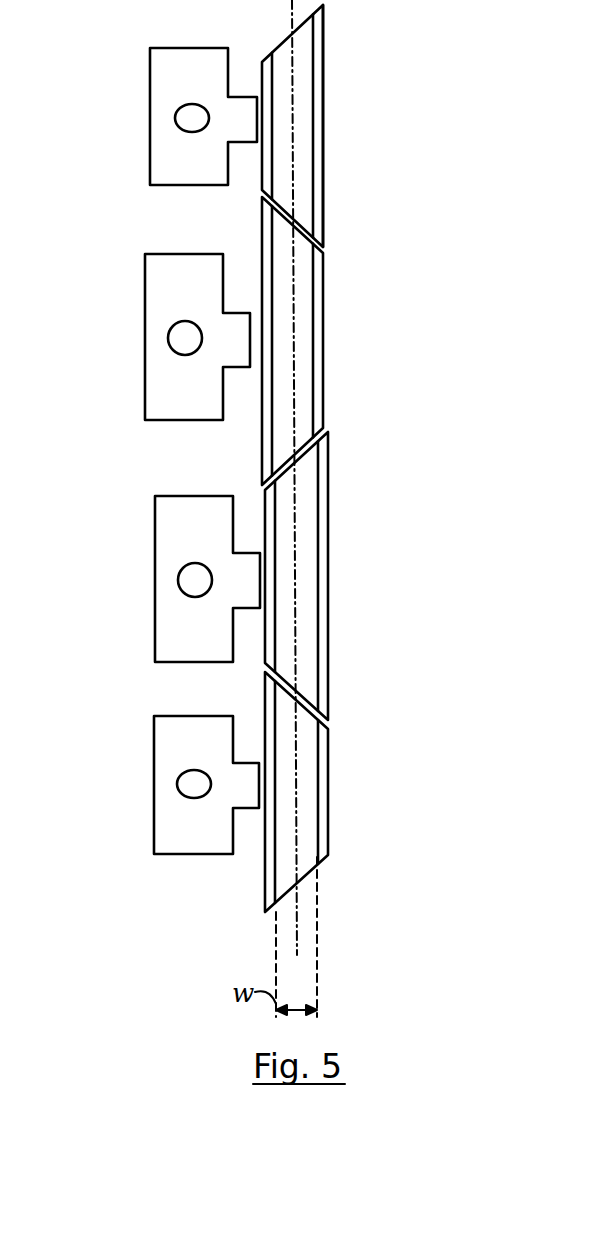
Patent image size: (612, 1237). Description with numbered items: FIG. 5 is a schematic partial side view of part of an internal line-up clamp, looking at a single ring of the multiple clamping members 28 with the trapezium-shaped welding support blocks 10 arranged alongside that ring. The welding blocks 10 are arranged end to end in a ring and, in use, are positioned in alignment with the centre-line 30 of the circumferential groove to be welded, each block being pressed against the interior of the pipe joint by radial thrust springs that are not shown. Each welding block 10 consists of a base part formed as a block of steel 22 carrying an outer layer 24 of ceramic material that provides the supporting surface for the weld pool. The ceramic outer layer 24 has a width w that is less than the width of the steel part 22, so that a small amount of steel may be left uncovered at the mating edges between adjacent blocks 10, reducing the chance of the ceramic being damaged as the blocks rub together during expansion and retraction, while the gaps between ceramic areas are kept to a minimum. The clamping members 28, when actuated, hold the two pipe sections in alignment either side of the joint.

The welding support block 10 is at (338, 458).
The block of steel 22 is at (320, 198).
The outer layer of ceramic material 24 is at (302, 72).
The clamping members 28 is at (162, 382).
The centre-line 30 is at (300, 936).